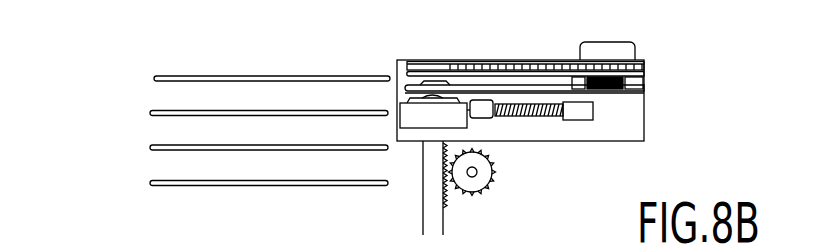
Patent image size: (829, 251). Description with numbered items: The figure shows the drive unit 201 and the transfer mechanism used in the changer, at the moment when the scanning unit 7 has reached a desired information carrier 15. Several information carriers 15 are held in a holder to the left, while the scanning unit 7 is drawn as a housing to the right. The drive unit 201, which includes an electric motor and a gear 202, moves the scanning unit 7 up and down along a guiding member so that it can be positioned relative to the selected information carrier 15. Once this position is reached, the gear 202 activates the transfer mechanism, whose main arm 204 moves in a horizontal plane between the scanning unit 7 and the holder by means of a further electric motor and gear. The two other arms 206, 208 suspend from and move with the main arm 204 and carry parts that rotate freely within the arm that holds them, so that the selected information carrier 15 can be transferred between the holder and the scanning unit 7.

The information carrier 15 is at (221, 76).
The scanning unit 7 is at (637, 124).
The drive unit 201 is at (512, 195).
The gear 202 is at (472, 186).
The main arm 204 is at (467, 62).
The arm 206 is at (492, 72).
The arm 208 is at (538, 92).